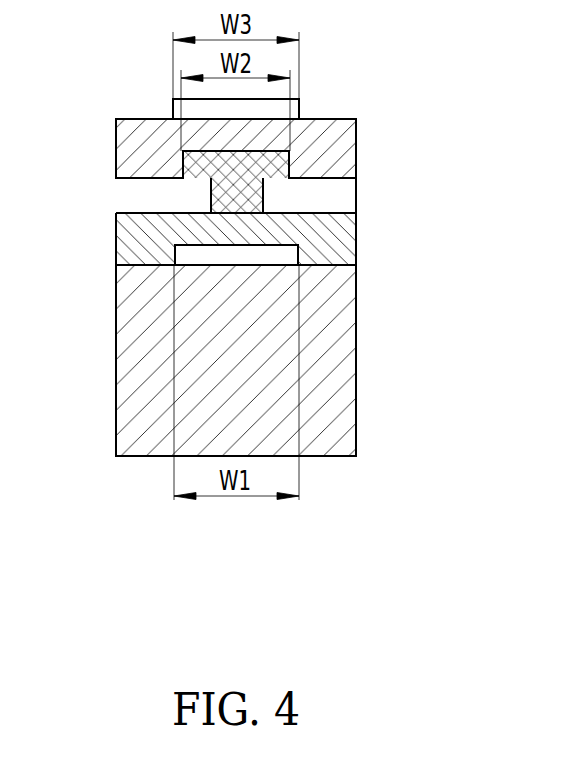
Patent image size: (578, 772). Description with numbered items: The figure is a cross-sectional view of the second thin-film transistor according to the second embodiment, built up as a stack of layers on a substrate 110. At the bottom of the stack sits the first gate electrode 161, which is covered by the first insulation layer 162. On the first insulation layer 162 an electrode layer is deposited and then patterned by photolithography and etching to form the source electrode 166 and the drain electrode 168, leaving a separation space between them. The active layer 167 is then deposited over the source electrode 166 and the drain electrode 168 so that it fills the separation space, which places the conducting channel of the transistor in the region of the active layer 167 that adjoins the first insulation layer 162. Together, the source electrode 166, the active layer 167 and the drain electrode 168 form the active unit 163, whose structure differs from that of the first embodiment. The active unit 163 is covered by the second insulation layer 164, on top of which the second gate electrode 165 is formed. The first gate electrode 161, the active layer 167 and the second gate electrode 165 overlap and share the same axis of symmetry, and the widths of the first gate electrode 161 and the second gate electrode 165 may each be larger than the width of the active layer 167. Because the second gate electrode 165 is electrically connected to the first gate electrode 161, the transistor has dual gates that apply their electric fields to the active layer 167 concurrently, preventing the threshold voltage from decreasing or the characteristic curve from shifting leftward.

The substrate 110 is at (340, 363).
The first gate electrode 161 is at (292, 255).
The first insulation layer 162 is at (335, 243).
The active unit 163 is at (473, 120).
The second insulation layer 164 is at (150, 132).
The second gate electrode 165 is at (290, 108).
The source electrode 166 is at (185, 185).
The active layer 167 is at (242, 197).
The drain electrode 168 is at (338, 208).